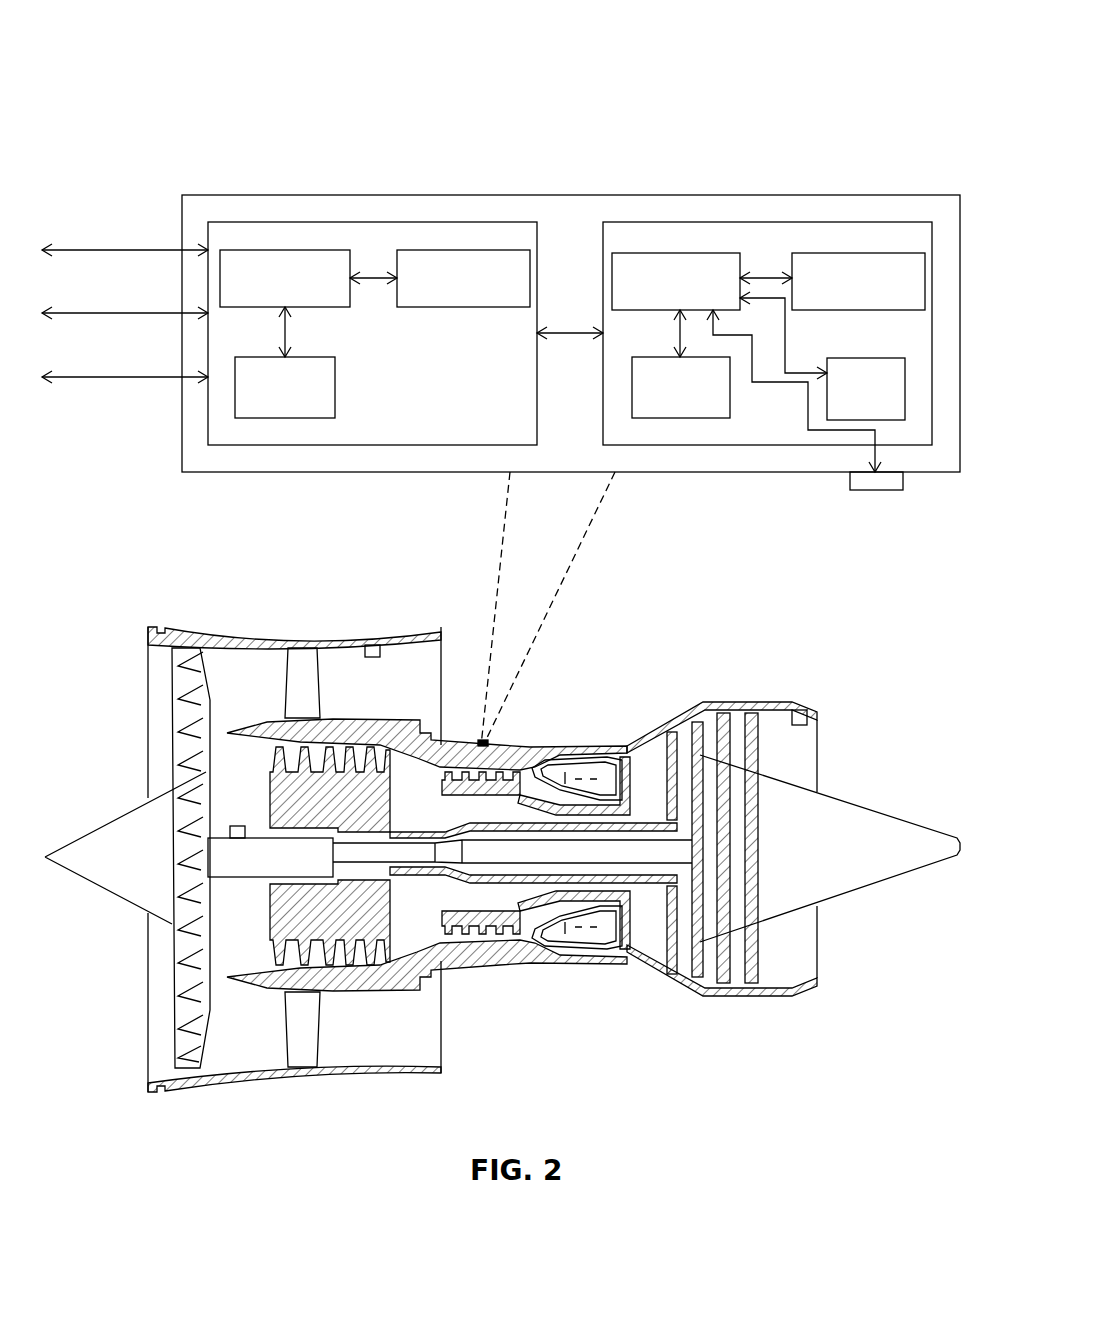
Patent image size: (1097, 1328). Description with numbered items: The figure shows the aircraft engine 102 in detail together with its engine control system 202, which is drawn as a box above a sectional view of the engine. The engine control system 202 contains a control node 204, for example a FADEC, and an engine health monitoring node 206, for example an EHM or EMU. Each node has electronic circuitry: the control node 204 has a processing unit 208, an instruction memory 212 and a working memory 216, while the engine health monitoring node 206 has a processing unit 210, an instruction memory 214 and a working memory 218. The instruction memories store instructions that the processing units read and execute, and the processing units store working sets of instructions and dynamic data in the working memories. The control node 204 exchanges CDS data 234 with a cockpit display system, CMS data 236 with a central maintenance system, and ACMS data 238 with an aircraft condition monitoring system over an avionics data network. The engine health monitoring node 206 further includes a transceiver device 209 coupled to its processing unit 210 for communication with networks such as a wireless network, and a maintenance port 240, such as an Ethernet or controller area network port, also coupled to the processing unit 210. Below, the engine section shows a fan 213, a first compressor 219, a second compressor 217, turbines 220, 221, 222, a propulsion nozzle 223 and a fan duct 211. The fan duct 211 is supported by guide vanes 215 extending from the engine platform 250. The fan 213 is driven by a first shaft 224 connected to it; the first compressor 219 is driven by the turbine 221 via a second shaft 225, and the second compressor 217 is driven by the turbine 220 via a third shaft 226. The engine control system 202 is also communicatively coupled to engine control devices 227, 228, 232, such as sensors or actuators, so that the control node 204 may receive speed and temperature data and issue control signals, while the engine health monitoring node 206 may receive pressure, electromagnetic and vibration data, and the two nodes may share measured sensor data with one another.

The aircraft engine 102 is at (812, 37).
The engine control system 202 is at (245, 195).
The control node 204 is at (380, 222).
The engine health monitoring node 206 is at (770, 222).
The processing unit 208 is at (340, 250).
The processing unit 210 is at (685, 253).
The instruction memory 212 is at (465, 250).
The instruction memory 214 is at (858, 253).
The working memory 216 is at (335, 376).
The working memory 218 is at (730, 385).
The transceiver device 209 is at (858, 358).
The maintenance port 240 is at (893, 490).
The CDS data 234 is at (128, 222).
The CMS data 236 is at (128, 285).
The ACMS data 238 is at (128, 349).
The fan duct 211 is at (233, 1073).
The fan 213 is at (192, 688).
The guide vanes 215 is at (302, 652).
The second compressor 217 is at (511, 934).
The first compressor 219 is at (293, 802).
The turbine 220 is at (622, 752).
The turbine 221 is at (668, 735).
The turbine 222 is at (721, 712).
The propulsion nozzle 223 is at (817, 765).
The first shaft 224 is at (231, 922).
The second shaft 225 is at (653, 880).
The third shaft 226 is at (573, 893).
The engine control device 227 is at (372, 645).
The engine control device 228 is at (799, 712).
The engine control device 232 is at (233, 830).
The engine platform 250 is at (528, 747).